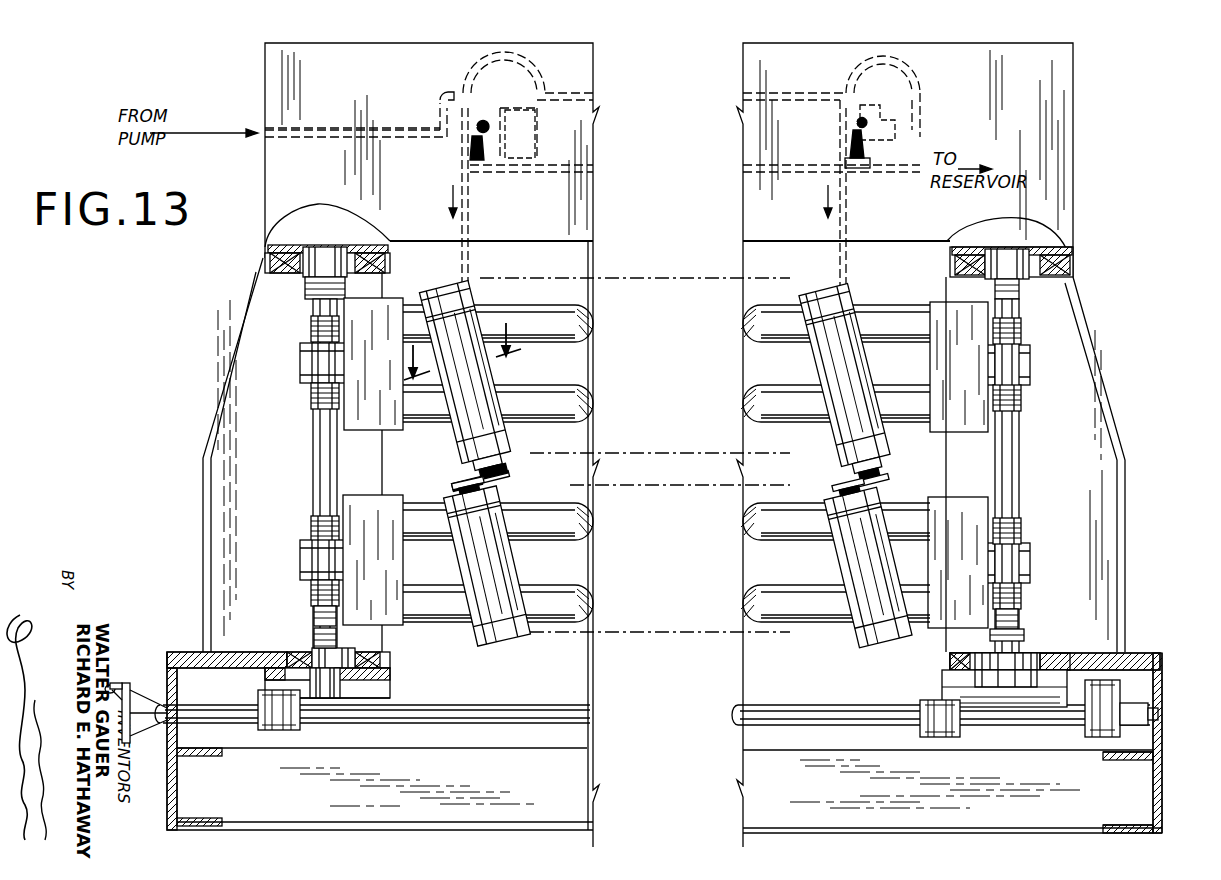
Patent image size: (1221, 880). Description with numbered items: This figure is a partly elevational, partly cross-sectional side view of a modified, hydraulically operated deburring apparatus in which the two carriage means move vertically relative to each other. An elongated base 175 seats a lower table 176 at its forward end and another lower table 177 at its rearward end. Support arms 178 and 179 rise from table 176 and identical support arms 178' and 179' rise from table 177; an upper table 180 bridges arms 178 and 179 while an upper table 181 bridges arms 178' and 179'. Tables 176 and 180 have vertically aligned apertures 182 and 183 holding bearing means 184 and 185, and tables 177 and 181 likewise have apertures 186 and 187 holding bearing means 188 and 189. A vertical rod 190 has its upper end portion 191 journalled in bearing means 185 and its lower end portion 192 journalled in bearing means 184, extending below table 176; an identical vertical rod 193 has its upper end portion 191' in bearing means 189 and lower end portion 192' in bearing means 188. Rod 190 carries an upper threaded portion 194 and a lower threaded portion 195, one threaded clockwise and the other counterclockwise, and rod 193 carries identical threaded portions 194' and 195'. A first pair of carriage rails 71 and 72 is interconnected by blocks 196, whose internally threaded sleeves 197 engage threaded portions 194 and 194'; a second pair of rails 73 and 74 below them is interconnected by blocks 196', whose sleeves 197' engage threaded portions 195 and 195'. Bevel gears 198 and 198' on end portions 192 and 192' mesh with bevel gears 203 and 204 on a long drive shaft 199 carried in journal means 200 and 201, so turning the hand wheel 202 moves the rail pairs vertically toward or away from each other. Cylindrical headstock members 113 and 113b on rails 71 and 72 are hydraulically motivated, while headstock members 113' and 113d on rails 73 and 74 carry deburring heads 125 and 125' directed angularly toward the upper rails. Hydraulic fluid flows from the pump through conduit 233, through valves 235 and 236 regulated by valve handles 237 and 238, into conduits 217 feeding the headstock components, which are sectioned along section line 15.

The section line 15 is at (448, 355).
The carriage rail 71 is at (598, 302).
The carriage rail 72 is at (598, 384).
The carriage rail 73 is at (598, 512).
The carriage rail 74 is at (598, 590).
The headstock member 113 is at (483, 384).
The headstock member 113' is at (500, 560).
The headstock member 113b is at (855, 368).
The headstock member 113d is at (830, 548).
The deburring head 125 is at (514, 470).
The deburring head 125' is at (446, 479).
The elongated base 175 is at (167, 822).
The lower table 176 is at (178, 652).
The lower table 177 is at (1158, 652).
The support arm 178 is at (233, 455).
The support arm 178' is at (1106, 464).
The support arm 179 is at (194, 470).
The support arm 179' is at (1127, 395).
The upper table 180 is at (265, 258).
The upper table 181 is at (1065, 280).
The aperture 182 is at (297, 646).
The aperture 183 is at (306, 287).
The bearing means 184 is at (312, 616).
The bearing means 185 is at (297, 250).
The aperture 186 is at (1040, 660).
The aperture 187 is at (1020, 292).
The bearing means 188 is at (950, 664).
The bearing means 189 is at (1068, 264).
The vertical rod 190 is at (313, 416).
The upper end portion 191 is at (327, 227).
The upper end portion 191' is at (1007, 235).
The lower end portion 192 is at (352, 667).
The lower end portion 192' is at (1024, 625).
The vertical rod 193 is at (1019, 420).
The threaded portion 194 is at (303, 326).
The threaded portion 194' is at (1030, 330).
The threaded portion 195 is at (300, 525).
The threaded portion 195' is at (1030, 522).
The block 196 is at (666, 347).
The block 196' is at (665, 557).
The internally threaded sleeve 197 is at (663, 364).
The internally threaded sleeve 197' is at (662, 561).
The bevel gear 198 is at (350, 683).
The bevel gear 198' is at (978, 688).
The drive shaft 199 is at (550, 704).
The journal means 200 is at (205, 748).
The journal means 201 is at (1085, 735).
The hand wheel 202 is at (126, 683).
The bevel gear 203 is at (277, 738).
The bevel gear 204 is at (955, 740).
The conduit 217 is at (838, 252).
The conduit 233 is at (297, 131).
The valve 235 is at (514, 142).
The valve 236 is at (877, 123).
The valve handle 237 is at (468, 148).
The valve handle 238 is at (848, 143).